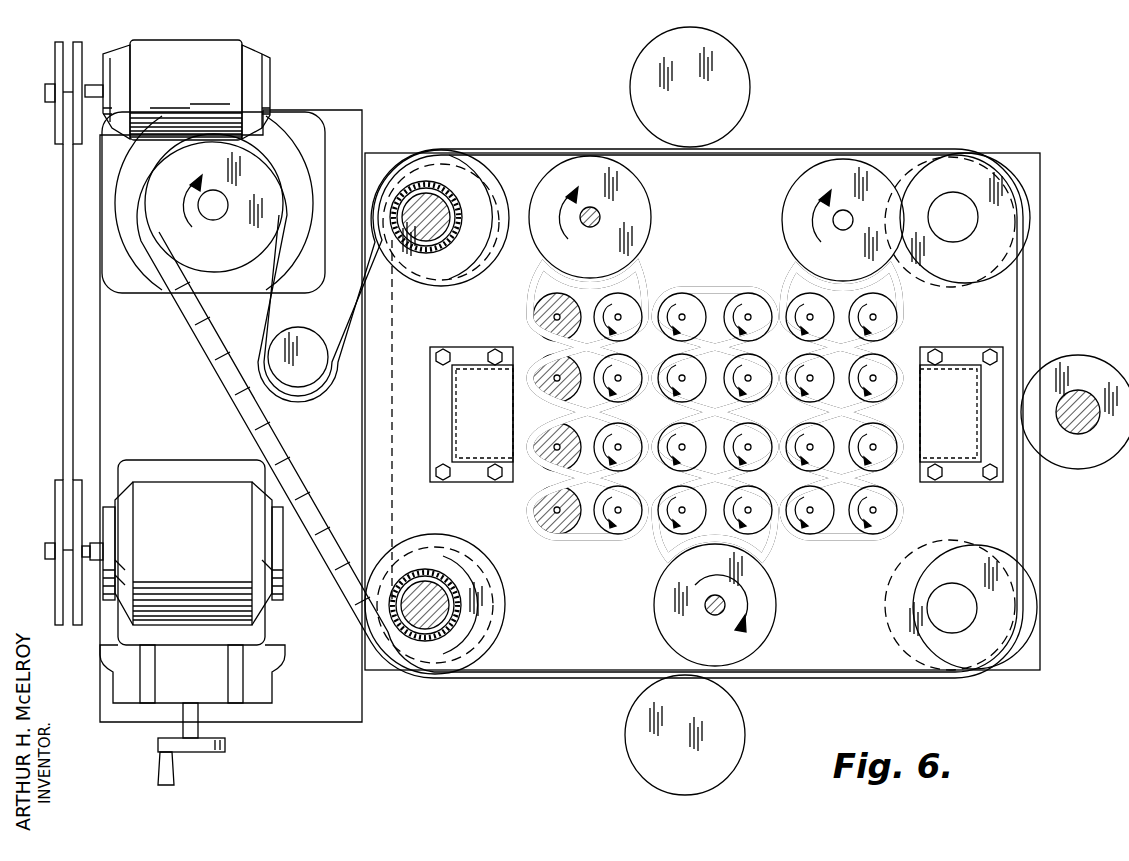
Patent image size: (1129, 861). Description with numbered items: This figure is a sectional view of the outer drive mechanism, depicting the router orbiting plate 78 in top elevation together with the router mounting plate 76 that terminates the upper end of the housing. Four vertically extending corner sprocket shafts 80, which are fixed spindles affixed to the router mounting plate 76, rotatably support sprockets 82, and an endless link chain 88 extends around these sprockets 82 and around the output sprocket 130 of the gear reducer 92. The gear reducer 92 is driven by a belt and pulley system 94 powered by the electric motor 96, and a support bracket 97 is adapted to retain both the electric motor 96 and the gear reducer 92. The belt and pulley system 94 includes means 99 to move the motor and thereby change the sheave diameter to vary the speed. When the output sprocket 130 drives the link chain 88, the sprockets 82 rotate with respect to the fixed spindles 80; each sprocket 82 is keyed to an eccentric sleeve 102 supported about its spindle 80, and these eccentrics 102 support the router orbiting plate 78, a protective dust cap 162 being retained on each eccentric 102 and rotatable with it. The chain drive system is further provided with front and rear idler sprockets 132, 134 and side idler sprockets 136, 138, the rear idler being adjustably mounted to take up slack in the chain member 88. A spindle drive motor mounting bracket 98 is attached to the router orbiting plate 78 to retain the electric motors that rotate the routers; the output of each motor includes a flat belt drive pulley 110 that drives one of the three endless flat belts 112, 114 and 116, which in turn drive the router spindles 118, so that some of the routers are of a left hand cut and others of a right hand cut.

The router mounting plate 76 is at (366, 467).
The router orbiting plate 78 is at (600, 647).
The corner sprocket shaft 80 is at (430, 192).
The sprocket 82 is at (410, 276).
The endless chain 88 is at (218, 373).
The gear reducer 92 is at (167, 107).
The belt and pulley system 94 is at (55, 192).
The electric motor 96 is at (172, 563).
The support bracket 97 is at (303, 687).
The spindle drive motor mounting bracket 98 is at (452, 380).
The means to move the motor 99 is at (200, 754).
The eccentric sleeve 102 is at (470, 192).
The flat belt drive pulley 110 is at (640, 195).
The endless flat belt 112 is at (593, 542).
The endless flat belt 114 is at (727, 292).
The endless flat belt 116 is at (835, 540).
The router spindle 118 is at (803, 305).
The output sprocket 130 is at (213, 252).
The front idler sprocket 132 is at (1066, 468).
The rear idler sprocket 134 is at (294, 382).
The side idler sprocket 136 is at (740, 80).
The side idler sprocket 138 is at (738, 722).
The protective dust cap 162 is at (965, 213).